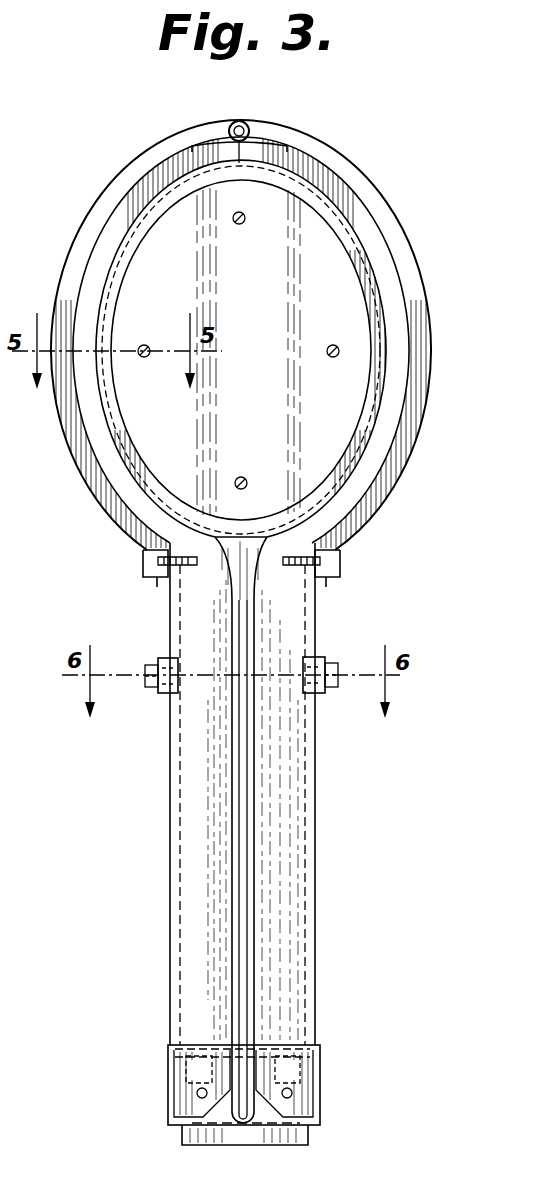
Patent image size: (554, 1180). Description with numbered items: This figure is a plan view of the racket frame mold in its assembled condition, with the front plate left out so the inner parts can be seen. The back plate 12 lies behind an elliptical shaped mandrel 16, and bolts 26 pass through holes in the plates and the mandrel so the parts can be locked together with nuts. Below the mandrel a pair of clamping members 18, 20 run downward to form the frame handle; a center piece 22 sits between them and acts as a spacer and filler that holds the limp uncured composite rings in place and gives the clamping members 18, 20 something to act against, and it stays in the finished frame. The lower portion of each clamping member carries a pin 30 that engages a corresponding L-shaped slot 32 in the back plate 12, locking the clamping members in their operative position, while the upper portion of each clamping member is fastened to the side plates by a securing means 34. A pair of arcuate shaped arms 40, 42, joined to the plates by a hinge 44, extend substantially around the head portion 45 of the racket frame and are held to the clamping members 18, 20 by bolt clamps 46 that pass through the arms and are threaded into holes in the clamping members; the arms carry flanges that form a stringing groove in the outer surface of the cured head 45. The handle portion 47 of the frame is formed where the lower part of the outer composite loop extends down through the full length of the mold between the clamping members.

The back plate 12 is at (146, 152).
The elliptical shaped mandrel 16 is at (335, 280).
The clamping member 18 is at (195, 807).
The clamping member 20 is at (293, 802).
The center piece 22 is at (240, 867).
The bolts 26 is at (240, 225).
The pins 30 is at (200, 1094).
The L-shaped slot 32 is at (170, 1065).
The securing means 34 is at (156, 699).
The arcuate shaped arm 40 is at (118, 218).
The arcuate shaped arm 42 is at (362, 233).
The hinge 44 is at (239, 121).
The frame head 45 is at (336, 206).
The bolt clamp 46 is at (143, 565).
The handle portion 47 is at (222, 935).